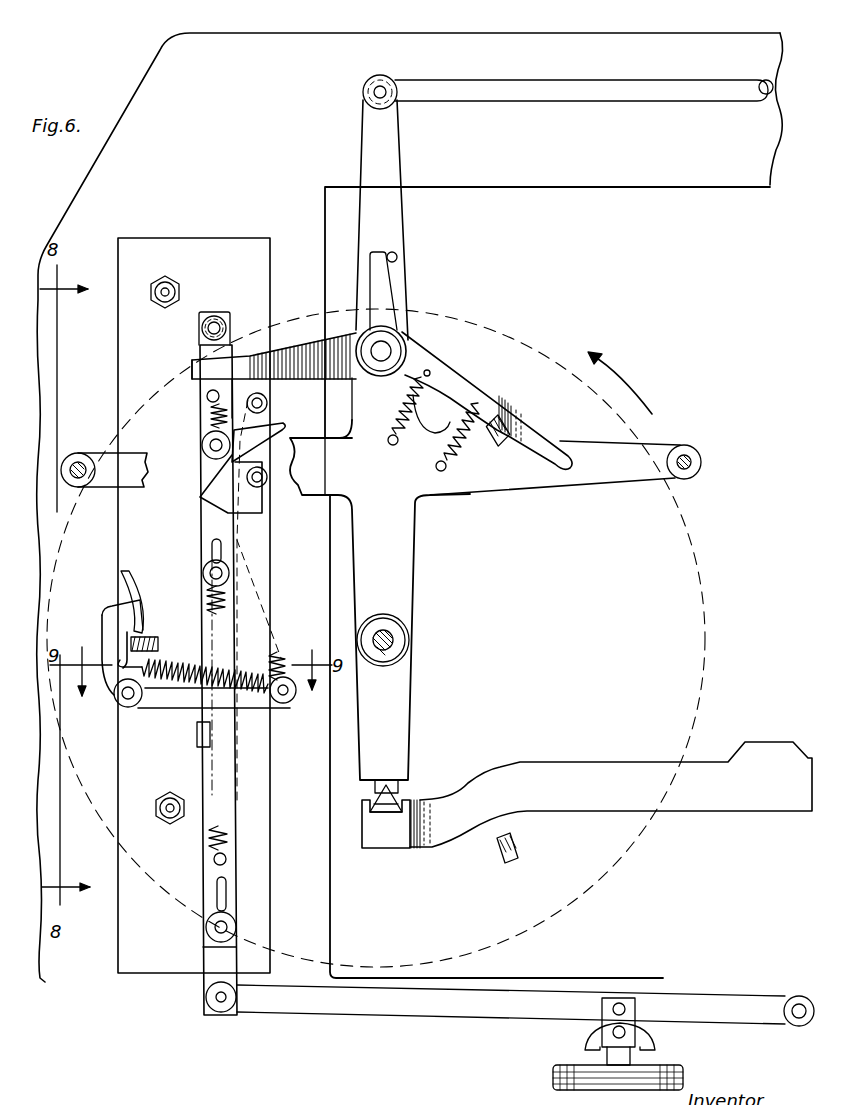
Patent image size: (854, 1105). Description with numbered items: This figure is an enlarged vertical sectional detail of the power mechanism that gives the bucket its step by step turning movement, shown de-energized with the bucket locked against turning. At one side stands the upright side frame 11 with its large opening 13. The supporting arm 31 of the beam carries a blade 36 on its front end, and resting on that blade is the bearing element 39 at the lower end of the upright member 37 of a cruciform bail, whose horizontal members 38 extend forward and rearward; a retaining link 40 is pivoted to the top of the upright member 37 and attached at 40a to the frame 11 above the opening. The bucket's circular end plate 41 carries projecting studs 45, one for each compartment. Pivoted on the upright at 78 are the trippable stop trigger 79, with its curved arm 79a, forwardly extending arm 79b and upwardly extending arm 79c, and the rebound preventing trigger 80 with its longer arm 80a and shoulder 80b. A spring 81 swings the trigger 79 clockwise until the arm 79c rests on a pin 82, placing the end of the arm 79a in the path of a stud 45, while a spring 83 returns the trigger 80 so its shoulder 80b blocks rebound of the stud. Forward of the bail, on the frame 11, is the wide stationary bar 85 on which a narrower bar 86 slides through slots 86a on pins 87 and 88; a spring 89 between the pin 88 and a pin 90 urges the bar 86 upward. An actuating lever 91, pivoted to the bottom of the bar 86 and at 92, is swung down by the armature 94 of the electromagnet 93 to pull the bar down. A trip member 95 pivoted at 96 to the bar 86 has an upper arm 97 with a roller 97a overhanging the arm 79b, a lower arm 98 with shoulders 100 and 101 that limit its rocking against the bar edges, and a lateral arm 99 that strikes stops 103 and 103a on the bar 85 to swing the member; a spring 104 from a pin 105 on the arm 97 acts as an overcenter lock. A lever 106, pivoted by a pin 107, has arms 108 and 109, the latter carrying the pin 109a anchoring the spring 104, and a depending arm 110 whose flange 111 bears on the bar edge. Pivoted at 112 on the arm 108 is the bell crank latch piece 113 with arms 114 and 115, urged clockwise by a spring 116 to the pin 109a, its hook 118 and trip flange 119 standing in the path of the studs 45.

The upright side frame 11 is at (370, 40).
The opening 13 is at (646, 187).
The supporting arm 31 is at (525, 752).
The blade 36 is at (386, 812).
The upright member 37 is at (408, 205).
The horizontal member 38 is at (632, 480).
The bearing element 39 is at (398, 778).
The retaining link 40 is at (512, 80).
The pivotal attachment 40a is at (762, 80).
The circular end plate 41 is at (70, 550).
The stud 45 is at (493, 442).
The pivot 78 is at (381, 351).
The trippable stop trigger 79 is at (303, 342).
The rearwardly and downwardly curved arm 79a is at (460, 390).
The forwardly extending arm 79b is at (302, 380).
The upwardly extending arm 79c is at (380, 286).
The rebound preventing trigger 80 is at (538, 424).
The downwardly and rearwardly extending arm 80a is at (553, 447).
The shoulder 80b is at (513, 444).
The spring 81 is at (402, 405).
The pin 82 is at (397, 257).
The spring 83 is at (440, 452).
The assembly and supporting bar 85 is at (118, 377).
The upright bar 86 is at (237, 870).
The longitudinal slot 86a is at (212, 550).
The pin 87 is at (215, 927).
The pin 88 is at (203, 573).
The spring 89 is at (209, 832).
The pin 90 is at (214, 860).
The actuating lever 91 is at (466, 1008).
The pivot 92 is at (797, 1004).
The solenoid or electromagnet 93 is at (553, 1081).
The armature 94 is at (607, 1057).
The trip or release member 95 is at (208, 423).
The pivot 96 is at (203, 447).
The upper arm 97 is at (192, 375).
The roller 97a is at (202, 328).
The lower arm 98 is at (226, 446).
The lateral arm 99 is at (258, 441).
The shoulder 100 is at (200, 493).
The shoulder 101 is at (230, 506).
The stop 103 is at (262, 486).
The stop 103a is at (256, 393).
The spring 104 is at (262, 541).
The pin 105 is at (207, 396).
The lever 106 is at (193, 716).
The pin 107 is at (240, 705).
The arm 108 is at (214, 715).
The arm 109 is at (250, 708).
The pin 109a is at (272, 703).
The depending arm 110 is at (212, 737).
The flange 111 is at (197, 747).
The pivot 112 is at (120, 702).
The latch piece 113 is at (105, 683).
The arm 114 is at (103, 630).
The arm 115 is at (150, 708).
The spring 116 is at (162, 665).
The hook 118 is at (128, 622).
The trip flange 119 is at (121, 573).